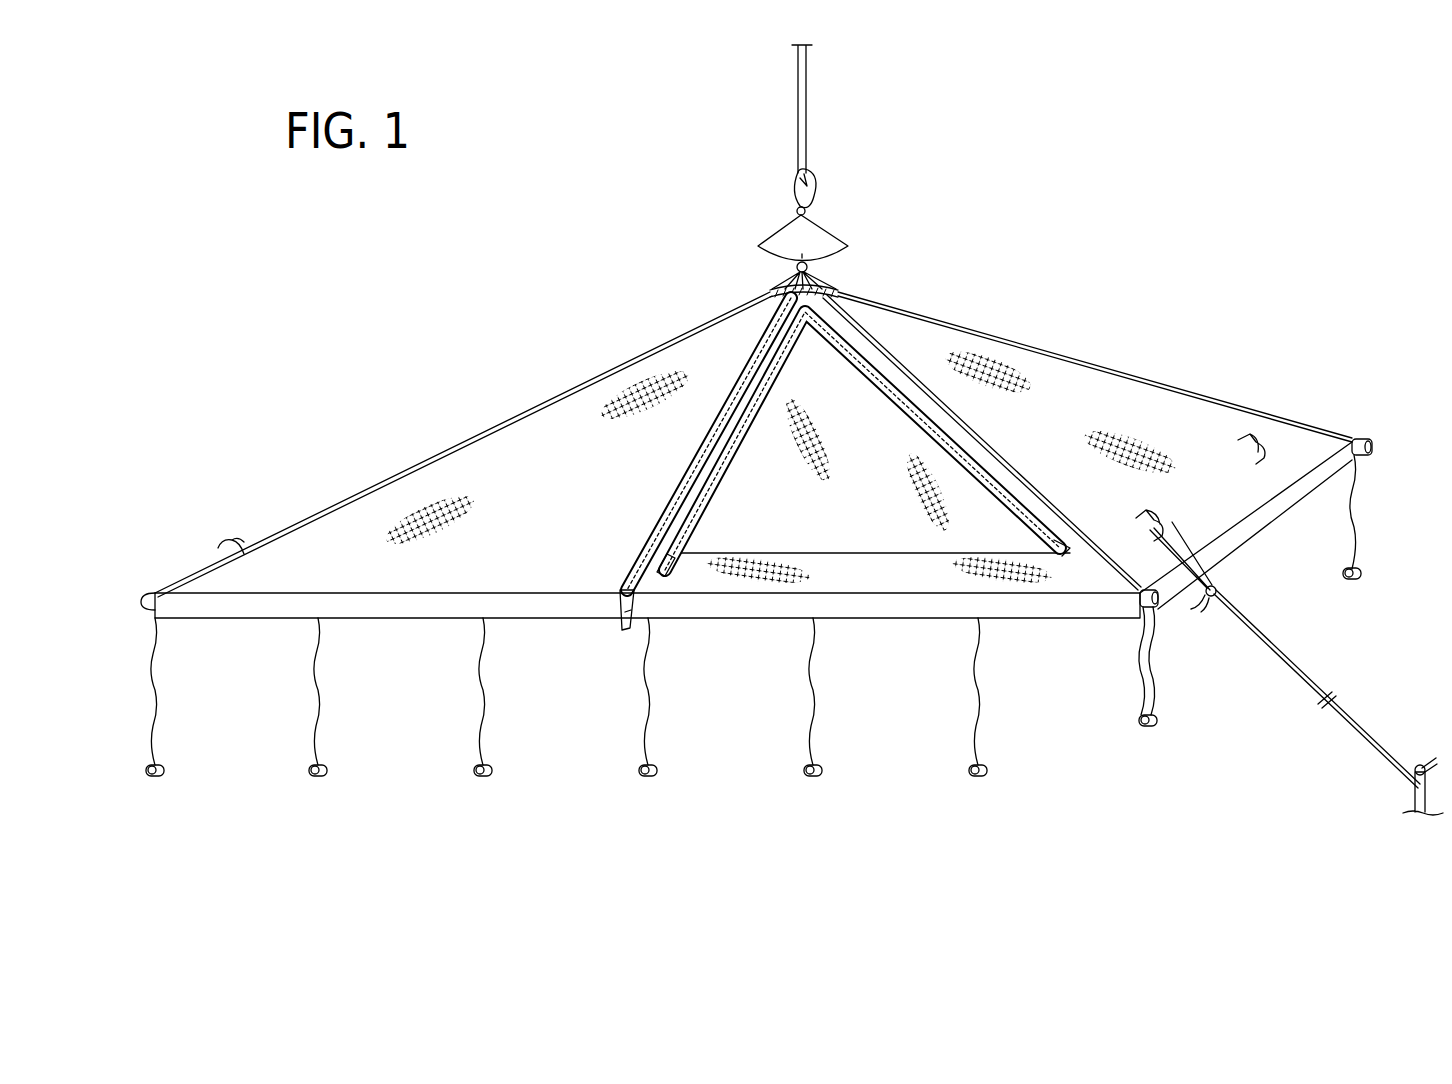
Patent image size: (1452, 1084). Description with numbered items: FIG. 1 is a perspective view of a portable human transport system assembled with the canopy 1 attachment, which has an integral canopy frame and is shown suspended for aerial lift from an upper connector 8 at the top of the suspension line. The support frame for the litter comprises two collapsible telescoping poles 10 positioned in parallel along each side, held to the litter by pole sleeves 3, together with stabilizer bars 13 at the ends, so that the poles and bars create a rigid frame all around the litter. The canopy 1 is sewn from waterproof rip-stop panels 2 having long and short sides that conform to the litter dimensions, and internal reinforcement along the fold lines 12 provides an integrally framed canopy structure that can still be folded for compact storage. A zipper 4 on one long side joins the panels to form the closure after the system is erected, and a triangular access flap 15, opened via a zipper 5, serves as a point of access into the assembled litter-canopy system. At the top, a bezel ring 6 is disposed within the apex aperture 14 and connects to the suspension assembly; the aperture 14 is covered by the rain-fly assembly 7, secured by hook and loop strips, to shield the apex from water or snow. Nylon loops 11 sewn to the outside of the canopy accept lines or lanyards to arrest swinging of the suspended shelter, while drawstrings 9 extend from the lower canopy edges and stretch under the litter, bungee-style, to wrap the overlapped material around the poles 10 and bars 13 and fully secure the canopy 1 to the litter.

The canopy 1 is at (525, 322).
The canopy panels 2 is at (566, 511).
The pole sleeves 3 is at (918, 605).
The zipper 4 is at (737, 380).
The zipper 5 is at (960, 447).
The bezel ring 6 is at (818, 270).
The rain-fly assembly 7 is at (840, 236).
The carabiner 8 is at (815, 182).
The drawstrings 9 is at (1358, 528).
The collapsible telescoping poles 10 is at (1358, 439).
The nylon loops 11 is at (230, 540).
The fold lines 12 is at (438, 452).
The stabilizer bars 13 is at (1255, 532).
The apex aperture 14 is at (877, 295).
The access flap 15 is at (884, 456).